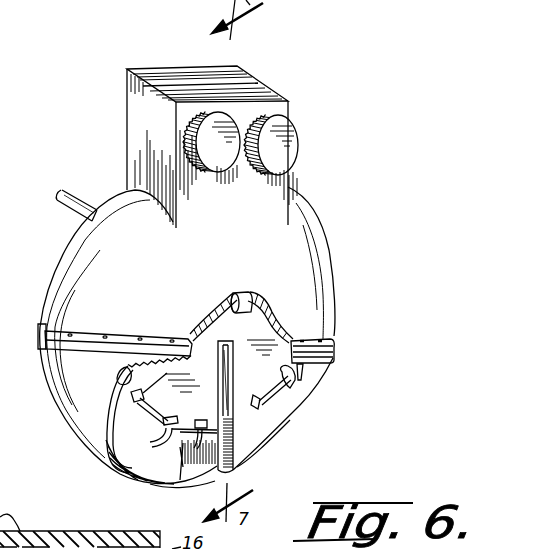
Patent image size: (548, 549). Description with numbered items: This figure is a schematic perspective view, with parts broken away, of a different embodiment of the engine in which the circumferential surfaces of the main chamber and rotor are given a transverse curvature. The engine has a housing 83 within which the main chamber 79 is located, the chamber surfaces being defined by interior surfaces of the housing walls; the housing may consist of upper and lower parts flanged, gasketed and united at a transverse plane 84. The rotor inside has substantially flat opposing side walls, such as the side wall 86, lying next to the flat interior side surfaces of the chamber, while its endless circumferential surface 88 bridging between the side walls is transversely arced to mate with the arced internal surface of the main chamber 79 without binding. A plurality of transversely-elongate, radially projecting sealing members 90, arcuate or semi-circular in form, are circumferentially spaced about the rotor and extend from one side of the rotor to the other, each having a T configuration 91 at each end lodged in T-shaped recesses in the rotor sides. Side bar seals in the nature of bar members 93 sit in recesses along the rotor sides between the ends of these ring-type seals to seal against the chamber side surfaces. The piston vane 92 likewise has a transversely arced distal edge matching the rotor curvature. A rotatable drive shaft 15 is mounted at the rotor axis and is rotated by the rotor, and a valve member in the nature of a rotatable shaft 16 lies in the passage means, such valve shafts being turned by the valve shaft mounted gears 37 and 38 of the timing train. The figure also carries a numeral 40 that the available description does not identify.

The valve shaft mounted gear 37 is at (207, 143).
The valve shaft mounted gear 38 is at (298, 125).
The rotatable drive shaft 15 is at (75, 198).
The housing 83 is at (108, 241).
The valve shaft 16 is at (246, 303).
The transverse plane 84 is at (334, 348).
The rotor side wall 86 is at (263, 374).
The T configuration 91 is at (313, 369).
The sealing member 90 is at (290, 417).
The bar member 93 is at (125, 374).
The circumferential surface of the rotor 88 is at (112, 460).
The main chamber 79 is at (172, 481).
The piston vane 92 is at (190, 482).
The base plate 40 is at (39, 531).